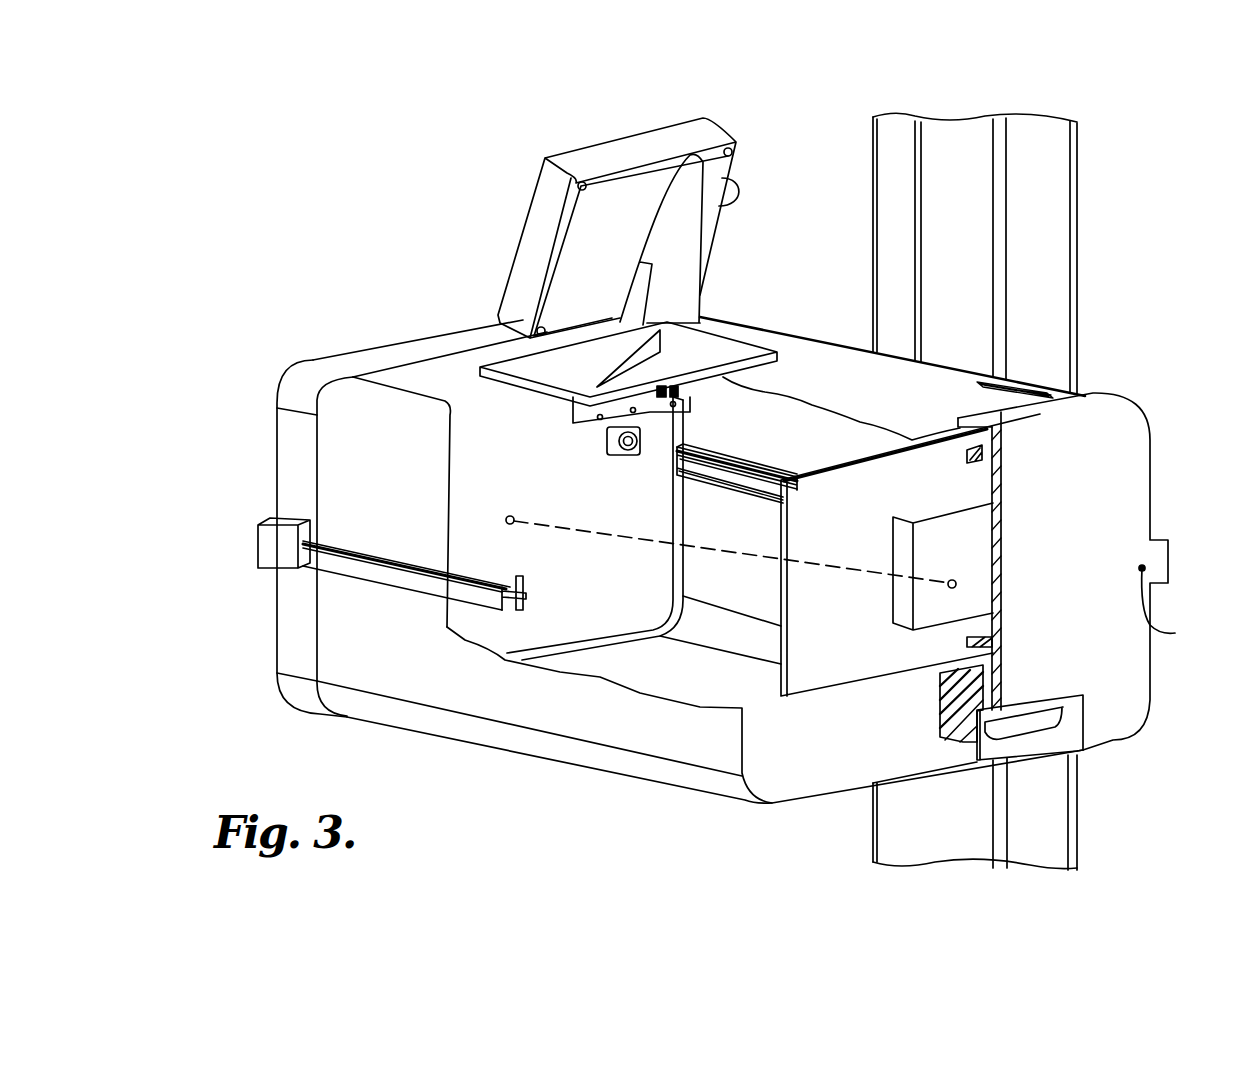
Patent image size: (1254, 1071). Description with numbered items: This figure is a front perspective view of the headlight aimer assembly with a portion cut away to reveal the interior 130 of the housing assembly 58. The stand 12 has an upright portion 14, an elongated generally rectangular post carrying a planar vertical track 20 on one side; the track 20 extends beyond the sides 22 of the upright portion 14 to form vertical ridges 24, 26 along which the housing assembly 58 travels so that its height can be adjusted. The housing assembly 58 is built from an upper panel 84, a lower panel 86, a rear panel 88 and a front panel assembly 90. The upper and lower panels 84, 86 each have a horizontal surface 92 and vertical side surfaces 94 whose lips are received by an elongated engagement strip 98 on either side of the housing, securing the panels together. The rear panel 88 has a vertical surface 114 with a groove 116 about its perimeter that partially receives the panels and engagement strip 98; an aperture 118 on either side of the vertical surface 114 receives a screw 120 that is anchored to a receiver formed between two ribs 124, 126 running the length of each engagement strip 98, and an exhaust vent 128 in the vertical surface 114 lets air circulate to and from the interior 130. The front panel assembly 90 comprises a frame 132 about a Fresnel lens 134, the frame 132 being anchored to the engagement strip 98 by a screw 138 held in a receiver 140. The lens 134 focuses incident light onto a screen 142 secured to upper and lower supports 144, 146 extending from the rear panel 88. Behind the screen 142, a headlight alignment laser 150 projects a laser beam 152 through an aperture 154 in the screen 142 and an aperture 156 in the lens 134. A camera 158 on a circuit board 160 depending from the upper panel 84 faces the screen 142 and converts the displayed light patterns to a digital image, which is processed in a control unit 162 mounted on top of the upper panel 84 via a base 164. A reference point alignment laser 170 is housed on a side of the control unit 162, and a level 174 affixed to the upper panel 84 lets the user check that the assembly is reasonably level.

The stand 12 is at (1082, 165).
The upright portion 14 is at (1072, 210).
The track 20 is at (935, 832).
The sides 22 is at (1063, 260).
The ridge 24 is at (873, 820).
The ridge 26 is at (1012, 845).
The housing assembly 58 is at (350, 400).
The upper panel 84 is at (420, 378).
The lower panel 86 is at (400, 714).
The rear panel 88 is at (1117, 483).
The front panel assembly 90 is at (283, 441).
The horizontal surface 92 is at (462, 374).
The vertical side surfaces 94 is at (342, 490).
The engagement strip 98 is at (402, 574).
The vertical surface 114 is at (1127, 670).
The groove 116 is at (990, 452).
The tab 118 is at (1156, 562).
The screw 120 is at (1176, 607).
The rib 124 is at (735, 478).
The rib 126 is at (757, 495).
The exhaust vent 128 is at (1032, 722).
The interior 130 is at (695, 660).
The frame 132 is at (298, 388).
The lens 134 is at (494, 438).
The screw 138 is at (690, 466).
The receiver 140 is at (680, 477).
The screen 142 is at (812, 665).
The upper support 144 is at (965, 458).
The lower support 146 is at (965, 647).
The headlight alignment laser 150 is at (907, 525).
The laser beam 152 is at (866, 590).
The aperture 154 is at (958, 582).
The aperture 156 is at (505, 520).
The camera 158 is at (610, 452).
The circuit board 160 is at (585, 425).
The control unit 162 is at (590, 150).
The base 164 is at (702, 345).
The reference point alignment laser 170 is at (738, 180).
The level 174 is at (1032, 390).